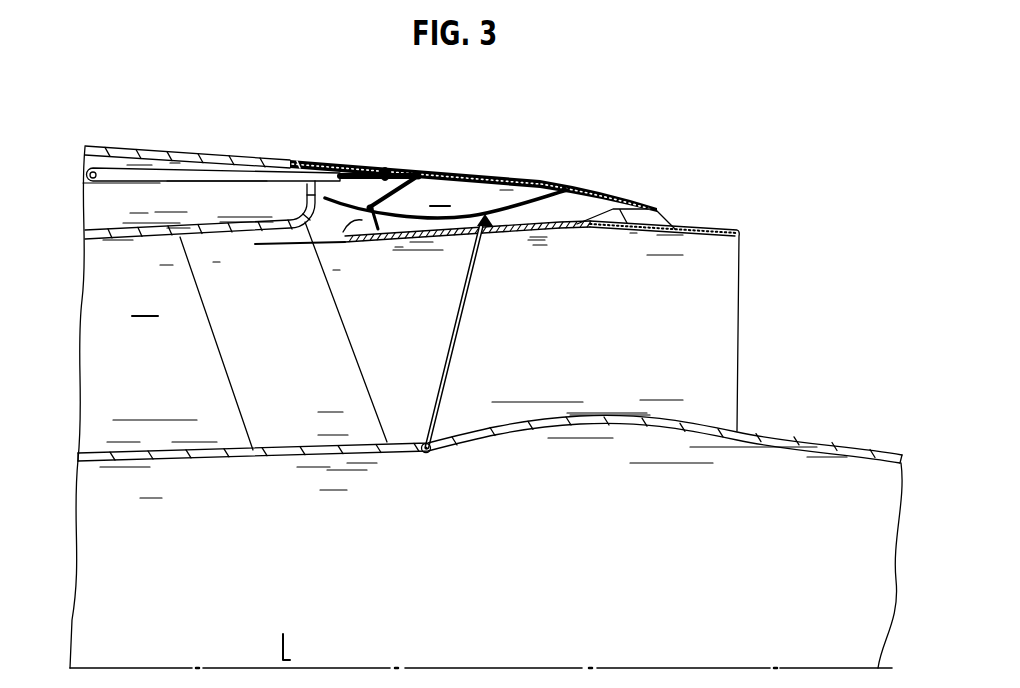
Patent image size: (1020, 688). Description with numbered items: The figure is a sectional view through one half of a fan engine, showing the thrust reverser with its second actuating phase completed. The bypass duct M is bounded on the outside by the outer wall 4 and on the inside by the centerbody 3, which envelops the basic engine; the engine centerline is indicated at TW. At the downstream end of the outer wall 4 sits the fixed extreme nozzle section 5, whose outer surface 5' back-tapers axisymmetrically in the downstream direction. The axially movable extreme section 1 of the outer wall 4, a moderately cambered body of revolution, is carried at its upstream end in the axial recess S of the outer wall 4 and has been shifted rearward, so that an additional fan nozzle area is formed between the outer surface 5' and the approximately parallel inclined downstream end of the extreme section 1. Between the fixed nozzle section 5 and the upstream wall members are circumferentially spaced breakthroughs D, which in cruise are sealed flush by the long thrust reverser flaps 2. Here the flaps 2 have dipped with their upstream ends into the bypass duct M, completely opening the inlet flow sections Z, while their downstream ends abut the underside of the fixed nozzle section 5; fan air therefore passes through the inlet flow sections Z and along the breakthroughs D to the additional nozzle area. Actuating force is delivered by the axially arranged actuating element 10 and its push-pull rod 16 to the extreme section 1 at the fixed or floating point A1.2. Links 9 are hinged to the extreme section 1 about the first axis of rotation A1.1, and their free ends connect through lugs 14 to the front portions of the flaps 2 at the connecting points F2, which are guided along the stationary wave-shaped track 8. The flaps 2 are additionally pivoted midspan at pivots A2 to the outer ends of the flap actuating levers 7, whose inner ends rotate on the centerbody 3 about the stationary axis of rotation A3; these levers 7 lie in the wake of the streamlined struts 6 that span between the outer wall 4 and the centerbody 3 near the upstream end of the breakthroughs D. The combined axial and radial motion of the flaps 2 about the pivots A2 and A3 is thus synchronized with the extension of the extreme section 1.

The outer wall 4 is at (137, 134).
The actuating element 10 is at (229, 172).
The axial recess S is at (300, 163).
The push-pull rod 16 is at (352, 166).
The fixed or floating point A1.2 is at (385, 166).
The first axis of rotation A1.1 is at (420, 178).
The movable extreme section 1 is at (538, 182).
The wave-shaped track 8 is at (561, 189).
The outer surface 5' is at (632, 177).
The fixed extreme nozzle section 5 is at (664, 293).
The breakthrough D is at (440, 192).
The bypass duct M is at (145, 300).
The inlet flow section Z is at (255, 244).
The lug 14 is at (330, 241).
The connecting point F2 is at (371, 213).
The link 9 is at (400, 190).
The pivot A2 is at (487, 231).
The thrust reverser flap 2 is at (567, 229).
The strut 6 is at (237, 350).
The flap actuating lever 7 is at (447, 370).
The centerbody 3 is at (240, 462).
The stationary axis of rotation A3 is at (424, 455).
The centerline TW is at (298, 648).